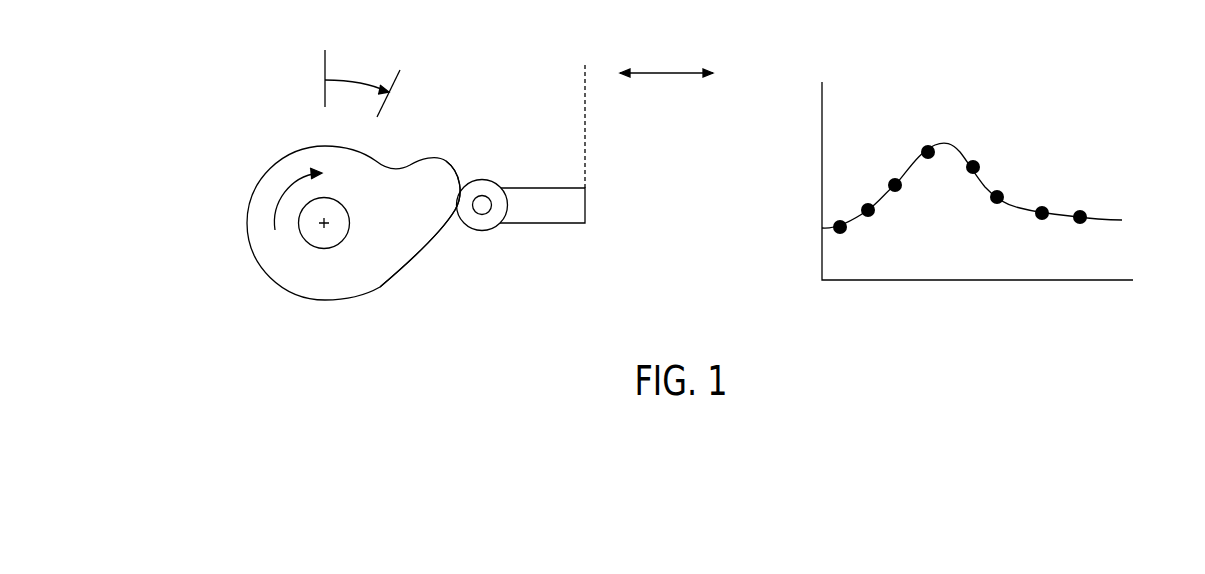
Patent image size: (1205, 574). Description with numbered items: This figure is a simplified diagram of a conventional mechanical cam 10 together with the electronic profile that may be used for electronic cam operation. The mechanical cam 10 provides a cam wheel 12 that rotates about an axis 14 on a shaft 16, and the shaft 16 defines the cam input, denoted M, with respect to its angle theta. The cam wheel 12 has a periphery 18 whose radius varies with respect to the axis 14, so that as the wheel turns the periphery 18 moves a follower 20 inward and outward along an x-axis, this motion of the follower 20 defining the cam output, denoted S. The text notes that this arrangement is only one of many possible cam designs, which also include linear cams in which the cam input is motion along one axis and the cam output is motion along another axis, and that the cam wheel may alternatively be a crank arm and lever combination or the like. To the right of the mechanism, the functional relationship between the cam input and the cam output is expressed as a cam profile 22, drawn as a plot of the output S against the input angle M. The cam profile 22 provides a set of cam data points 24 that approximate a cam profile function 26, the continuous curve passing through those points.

The mechanical cam 10 is at (228, 118).
The cam wheel 12 is at (308, 278).
The axis 14 is at (313, 238).
The shaft 16 is at (327, 229).
The periphery 18 is at (413, 268).
The follower 20 is at (540, 205).
The cam profile 22 is at (1090, 131).
The cam data points 24 is at (841, 220).
The cam profile function 26 is at (1102, 218).